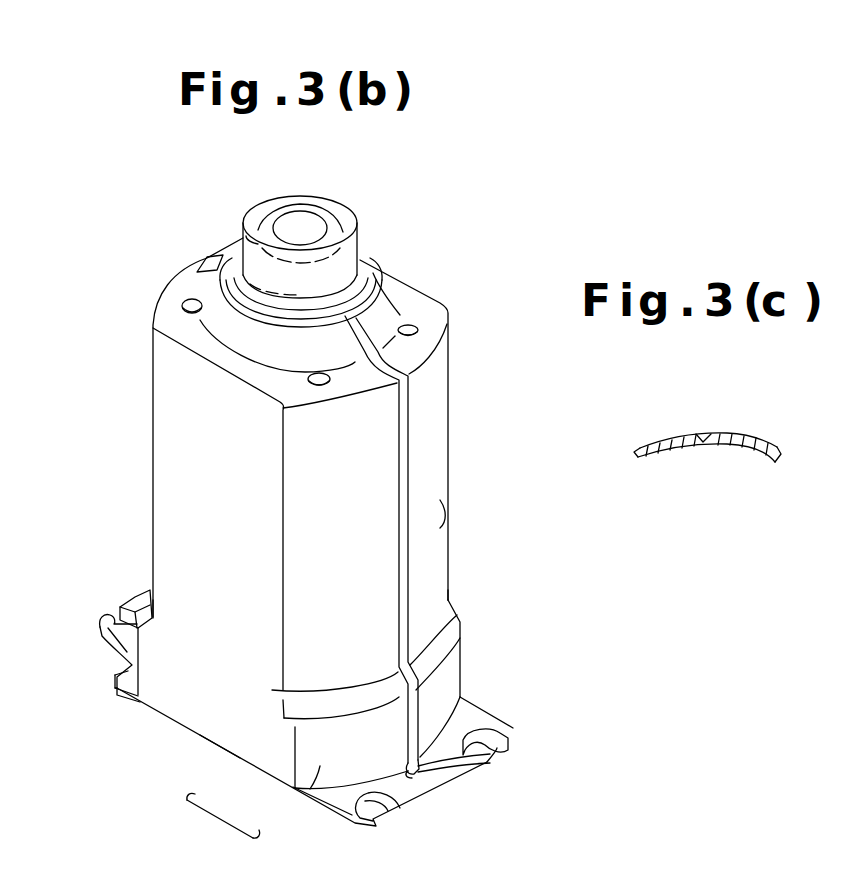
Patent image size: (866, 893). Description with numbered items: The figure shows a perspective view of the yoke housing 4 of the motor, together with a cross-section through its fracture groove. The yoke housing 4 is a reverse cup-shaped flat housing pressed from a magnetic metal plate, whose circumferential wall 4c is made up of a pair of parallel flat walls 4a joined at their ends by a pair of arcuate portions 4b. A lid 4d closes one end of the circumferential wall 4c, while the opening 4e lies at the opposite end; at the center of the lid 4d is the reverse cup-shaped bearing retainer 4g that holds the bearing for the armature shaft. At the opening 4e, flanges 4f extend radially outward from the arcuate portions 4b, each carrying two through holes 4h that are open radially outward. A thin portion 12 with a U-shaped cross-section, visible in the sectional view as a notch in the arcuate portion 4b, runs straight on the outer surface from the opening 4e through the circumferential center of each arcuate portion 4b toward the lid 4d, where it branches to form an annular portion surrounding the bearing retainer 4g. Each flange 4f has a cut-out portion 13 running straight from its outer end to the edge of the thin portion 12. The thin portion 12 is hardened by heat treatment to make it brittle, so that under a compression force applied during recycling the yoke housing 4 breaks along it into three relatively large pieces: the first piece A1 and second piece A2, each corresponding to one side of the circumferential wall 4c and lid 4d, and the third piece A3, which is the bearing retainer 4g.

In FIG. 3B, the yoke housing 4 is at (96, 203).
In FIG. 3C, the yoke housing 4 is at (660, 438).
In FIG. 3B, the flat wall 4a is at (247, 764).
In FIG. 3B, the arcuate portion 4b is at (372, 520).
In FIG. 3B, the circumferential wall 4c is at (226, 818).
In FIG. 3B, the lid 4d is at (415, 301).
In FIG. 3B, the opening 4e is at (192, 747).
In FIG. 3B, the flange 4f is at (127, 647).
In FIG. 3B, the bearing retainer 4g is at (250, 223).
In FIG. 3B, the through hole 4h is at (100, 622).
In FIG. 3B, the thin portion 12 is at (222, 270).
In FIG. 3C, the thin portion 12 is at (707, 437).
In FIG. 3B, the cut-out portion 13 is at (420, 775).
In FIG. 3B, the first piece A1 is at (450, 452).
In FIG. 3B, the second piece A2 is at (180, 438).
In FIG. 3B, the third piece A3 is at (352, 214).